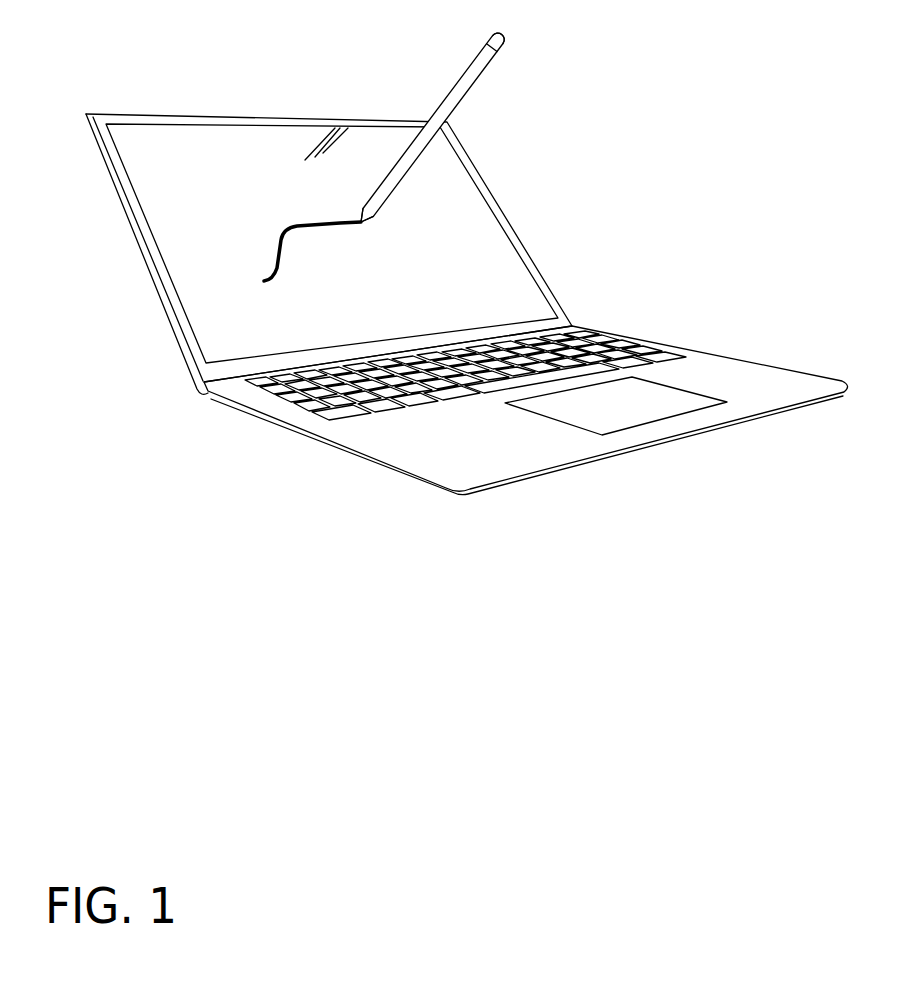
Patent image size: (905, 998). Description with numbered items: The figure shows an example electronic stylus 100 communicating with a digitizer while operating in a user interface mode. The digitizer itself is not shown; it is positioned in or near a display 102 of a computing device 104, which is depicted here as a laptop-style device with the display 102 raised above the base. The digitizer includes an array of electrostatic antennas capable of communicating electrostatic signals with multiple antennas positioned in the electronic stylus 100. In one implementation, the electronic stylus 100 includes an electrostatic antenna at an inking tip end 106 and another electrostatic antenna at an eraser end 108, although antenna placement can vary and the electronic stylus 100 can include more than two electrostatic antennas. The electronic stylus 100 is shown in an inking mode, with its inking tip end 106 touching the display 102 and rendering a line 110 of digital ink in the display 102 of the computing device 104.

The electronic stylus 100 is at (373, 111).
The display 102 is at (177, 159).
The computing device 104 is at (443, 492).
The inking tip end 106 is at (361, 212).
The eraser end 108 is at (489, 40).
The line of digital ink 110 is at (280, 239).